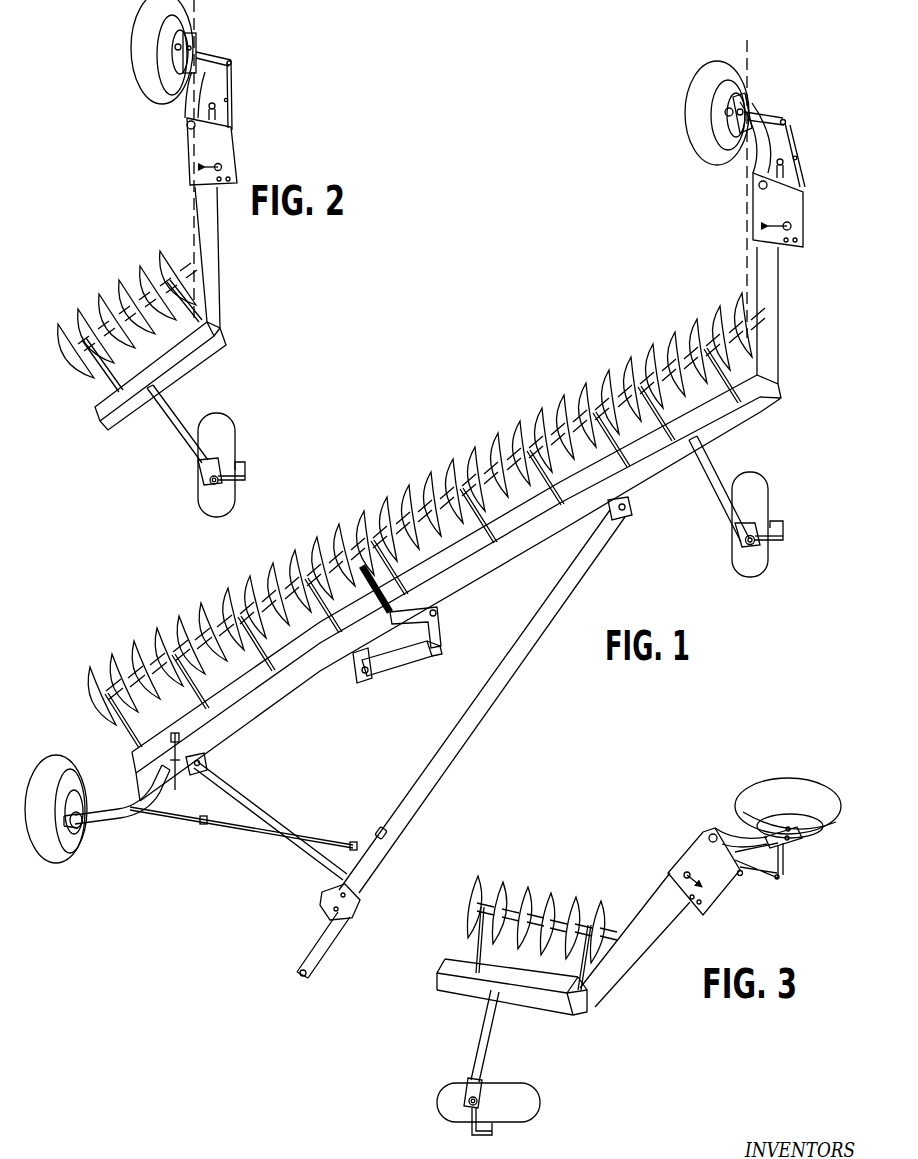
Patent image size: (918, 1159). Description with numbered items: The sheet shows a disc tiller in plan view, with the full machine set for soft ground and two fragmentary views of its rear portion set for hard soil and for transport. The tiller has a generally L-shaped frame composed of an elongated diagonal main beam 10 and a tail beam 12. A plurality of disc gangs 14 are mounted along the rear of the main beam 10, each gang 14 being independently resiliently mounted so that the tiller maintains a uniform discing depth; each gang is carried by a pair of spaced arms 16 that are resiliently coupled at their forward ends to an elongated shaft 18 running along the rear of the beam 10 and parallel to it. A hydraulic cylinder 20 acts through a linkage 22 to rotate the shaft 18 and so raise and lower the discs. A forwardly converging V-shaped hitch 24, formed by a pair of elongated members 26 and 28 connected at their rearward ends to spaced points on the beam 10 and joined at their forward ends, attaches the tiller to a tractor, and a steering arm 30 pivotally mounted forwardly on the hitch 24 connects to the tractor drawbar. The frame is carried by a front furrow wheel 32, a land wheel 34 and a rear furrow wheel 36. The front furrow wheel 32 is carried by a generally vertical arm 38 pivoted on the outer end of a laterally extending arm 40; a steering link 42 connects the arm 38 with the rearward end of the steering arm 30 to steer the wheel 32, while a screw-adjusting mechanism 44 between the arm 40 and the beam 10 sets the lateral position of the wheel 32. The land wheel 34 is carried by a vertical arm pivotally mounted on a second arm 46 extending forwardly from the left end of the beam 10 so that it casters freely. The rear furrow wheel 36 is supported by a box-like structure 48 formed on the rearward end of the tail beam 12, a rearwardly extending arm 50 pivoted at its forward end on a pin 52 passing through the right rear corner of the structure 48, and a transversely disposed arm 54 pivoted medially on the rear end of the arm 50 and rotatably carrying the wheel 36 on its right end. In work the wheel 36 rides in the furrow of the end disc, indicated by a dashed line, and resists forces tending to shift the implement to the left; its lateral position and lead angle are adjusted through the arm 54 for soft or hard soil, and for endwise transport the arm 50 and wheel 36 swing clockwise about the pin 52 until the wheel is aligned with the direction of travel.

In FIG. 1, the main beam 10 is at (302, 684).
In FIG. 2, the main beam 10 is at (192, 364).
In FIG. 3, the main beam 10 is at (527, 1004).
In FIG. 1, the tail beam 12 is at (779, 328).
In FIG. 2, the tail beam 12 is at (218, 280).
In FIG. 3, the tail beam 12 is at (646, 936).
In FIG. 1, the disc gangs 14 is at (614, 362).
In FIG. 2, the disc gangs 14 is at (100, 288).
In FIG. 3, the disc gangs 14 is at (540, 888).
In FIG. 1, the spaced arms 16 is at (138, 731).
In FIG. 1, the elongated shaft 18 is at (638, 448).
In FIG. 1, the hydraulic cylinder 20 is at (406, 660).
In FIG. 1, the linkage 22 is at (445, 626).
In FIG. 1, the V-shaped hitch 24 is at (409, 737).
In FIG. 1, the elongated member 26 is at (250, 798).
In FIG. 1, the elongated member 28 is at (525, 648).
In FIG. 1, the steering arm 30 is at (327, 926).
In FIG. 1, the front furrow wheel 32 is at (50, 860).
In FIG. 1, the land wheel 34 is at (752, 578).
In FIG. 2, the land wheel 34 is at (228, 428).
In FIG. 3, the land wheel 34 is at (522, 1122).
In FIG. 1, the rear furrow wheel 36 is at (690, 90).
In FIG. 2, the rear furrow wheel 36 is at (136, 77).
In FIG. 3, the rear furrow wheel 36 is at (791, 784).
In FIG. 1, the vertical arm 38 is at (92, 828).
In FIG. 1, the laterally extending arm 40 is at (120, 814).
In FIG. 1, the steering link 42 is at (242, 832).
In FIG. 1, the screw-adjusting mechanism 44 is at (785, 536).
In FIG. 1, the second arm 46 is at (712, 477).
In FIG. 1, the box-like structure 48 is at (810, 210).
In FIG. 2, the box-like structure 48 is at (240, 152).
In FIG. 3, the box-like structure 48 is at (726, 893).
In FIG. 1, the rearwardly extending arm 50 is at (756, 160).
In FIG. 2, the rearwardly extending arm 50 is at (188, 104).
In FIG. 3, the rearwardly extending arm 50 is at (740, 835).
In FIG. 1, the pin 52 is at (756, 192).
In FIG. 2, the pin 52 is at (186, 135).
In FIG. 3, the pin 52 is at (707, 838).
In FIG. 1, the transversely disposed arm 54 is at (770, 117).
In FIG. 2, the transversely disposed arm 54 is at (213, 58).
In FIG. 3, the transversely disposed arm 54 is at (786, 864).